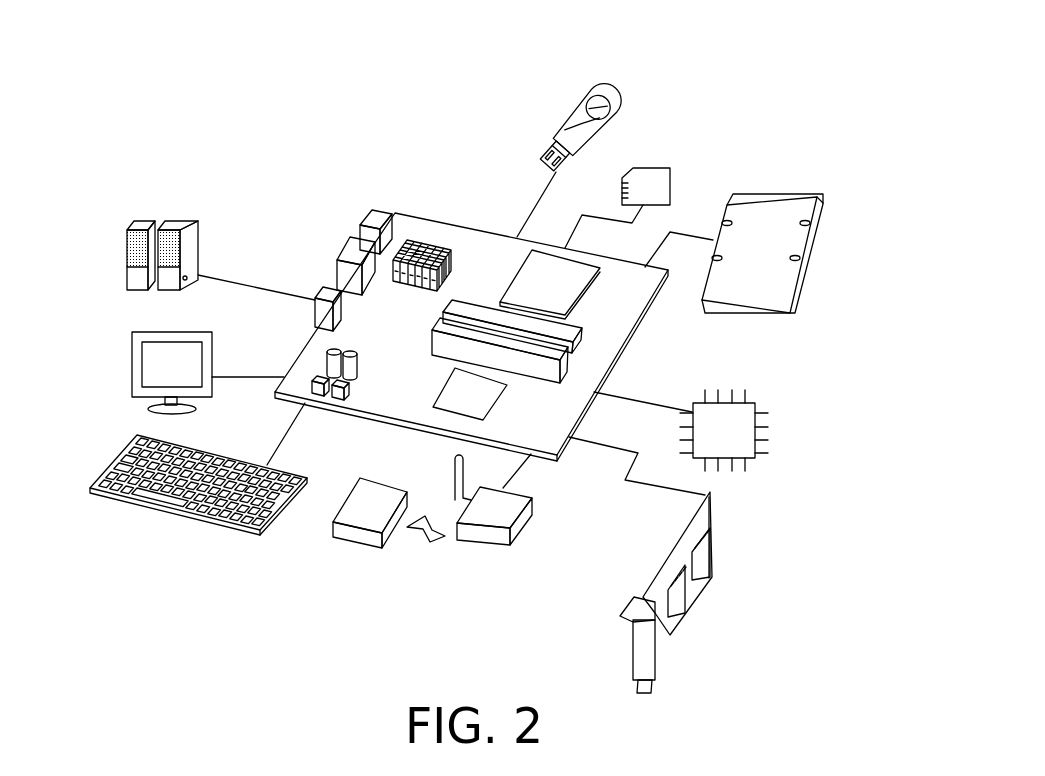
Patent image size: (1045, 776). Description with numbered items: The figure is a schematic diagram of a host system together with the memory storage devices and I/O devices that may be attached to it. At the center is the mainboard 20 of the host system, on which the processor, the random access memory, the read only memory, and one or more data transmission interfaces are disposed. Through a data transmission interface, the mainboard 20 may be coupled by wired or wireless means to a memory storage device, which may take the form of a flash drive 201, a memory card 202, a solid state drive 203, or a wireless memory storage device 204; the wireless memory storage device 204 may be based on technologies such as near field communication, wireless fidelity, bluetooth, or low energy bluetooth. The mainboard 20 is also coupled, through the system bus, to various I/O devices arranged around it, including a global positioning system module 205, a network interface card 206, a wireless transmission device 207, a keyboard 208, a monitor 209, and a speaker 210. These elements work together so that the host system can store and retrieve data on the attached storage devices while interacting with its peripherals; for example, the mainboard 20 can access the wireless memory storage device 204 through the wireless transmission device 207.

The mainboard 20 is at (465, 244).
The flash drive 201 is at (578, 115).
The memory card 202 is at (661, 180).
The solid state drive 203 is at (812, 242).
The wireless memory storage device 204 is at (350, 510).
The global positioning system module 205 is at (757, 408).
The network interface card 206 is at (700, 585).
The wireless transmission device 207 is at (523, 523).
The keyboard 208 is at (123, 450).
The monitor 209 is at (132, 353).
The speaker 210 is at (127, 270).